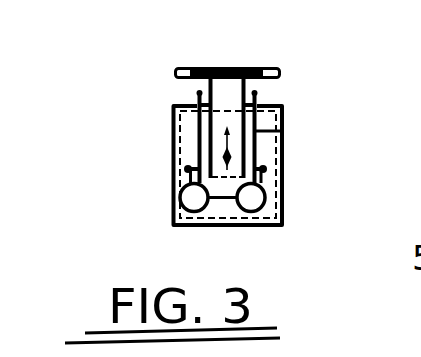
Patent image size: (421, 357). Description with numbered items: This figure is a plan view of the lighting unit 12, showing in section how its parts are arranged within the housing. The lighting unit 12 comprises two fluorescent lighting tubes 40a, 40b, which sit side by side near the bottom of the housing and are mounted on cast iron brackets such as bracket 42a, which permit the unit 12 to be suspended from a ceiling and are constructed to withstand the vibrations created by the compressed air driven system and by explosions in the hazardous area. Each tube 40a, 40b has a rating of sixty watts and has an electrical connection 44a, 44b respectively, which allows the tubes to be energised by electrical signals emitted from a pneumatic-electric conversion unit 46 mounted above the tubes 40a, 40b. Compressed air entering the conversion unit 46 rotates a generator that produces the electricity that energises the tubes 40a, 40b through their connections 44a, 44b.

The lighting unit 12 is at (168, 141).
The cast iron bracket 42a is at (245, 85).
The pneumatic-electric conversion unit 46 is at (282, 131).
The electrical connection 44a is at (176, 184).
The electrical connection 44b is at (284, 192).
The fluorescent lighting tube 40a is at (173, 223).
The fluorescent lighting tube 40b is at (282, 223).